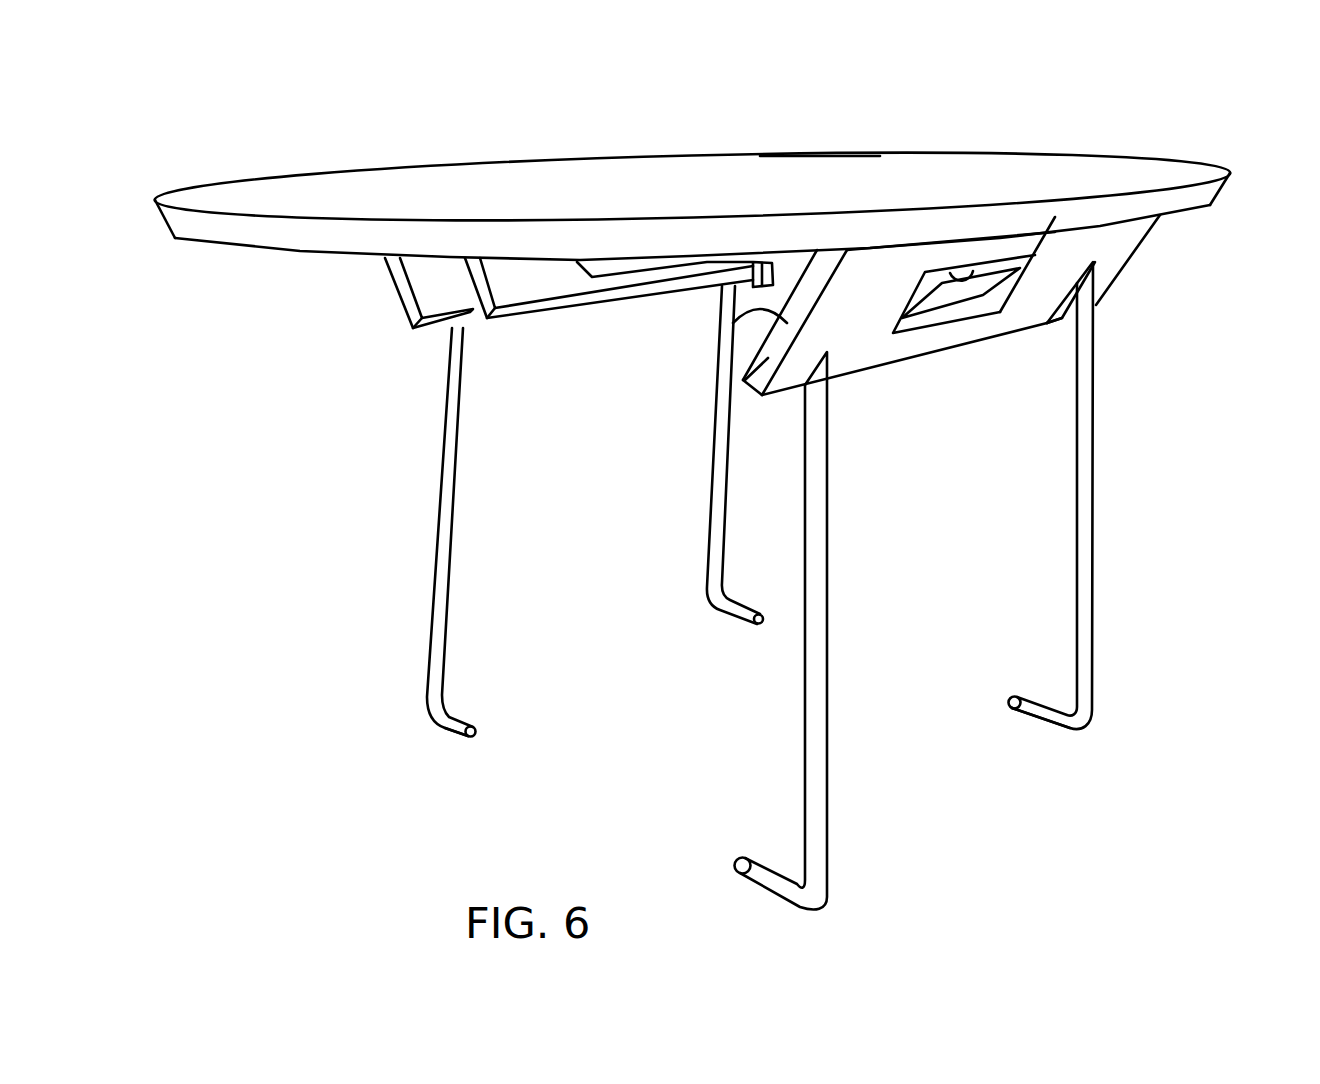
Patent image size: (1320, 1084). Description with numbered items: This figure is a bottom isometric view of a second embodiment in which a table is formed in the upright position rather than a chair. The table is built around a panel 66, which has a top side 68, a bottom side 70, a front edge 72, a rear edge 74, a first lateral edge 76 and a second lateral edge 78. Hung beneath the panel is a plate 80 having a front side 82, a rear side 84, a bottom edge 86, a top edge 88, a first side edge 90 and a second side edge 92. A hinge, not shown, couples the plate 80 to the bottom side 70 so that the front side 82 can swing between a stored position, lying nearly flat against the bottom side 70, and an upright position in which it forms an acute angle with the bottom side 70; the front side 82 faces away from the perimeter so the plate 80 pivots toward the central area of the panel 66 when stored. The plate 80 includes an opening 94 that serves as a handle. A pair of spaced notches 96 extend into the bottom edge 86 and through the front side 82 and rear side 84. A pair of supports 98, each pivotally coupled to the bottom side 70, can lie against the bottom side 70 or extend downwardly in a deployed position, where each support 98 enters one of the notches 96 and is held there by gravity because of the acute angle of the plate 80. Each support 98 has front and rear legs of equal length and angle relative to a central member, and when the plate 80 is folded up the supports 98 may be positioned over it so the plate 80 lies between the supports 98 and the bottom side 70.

The panel 66 is at (1233, 175).
The top side 68 is at (728, 167).
The bottom side 70 is at (298, 252).
The front edge 72 is at (225, 185).
The rear edge 74 is at (1033, 330).
The first lateral edge 76 is at (818, 153).
The second lateral edge 78 is at (530, 242).
The plate 80 is at (759, 398).
The front side 82 is at (733, 322).
The rear side 84 is at (887, 357).
The bottom edge 86 is at (973, 345).
The top edge 88 is at (1138, 222).
The first side edge 90 is at (743, 387).
The second side edge 92 is at (1117, 278).
The opening 94 is at (975, 265).
The notches 96 is at (827, 352).
The supports 98 is at (417, 767).